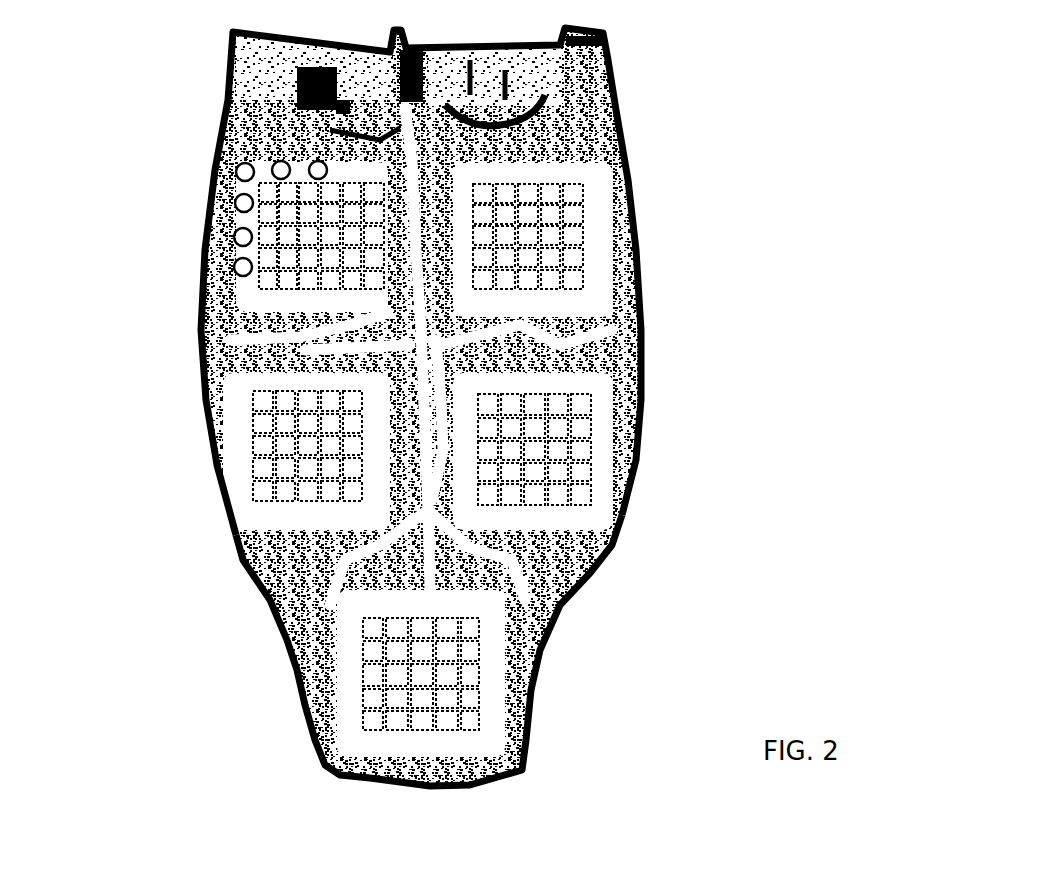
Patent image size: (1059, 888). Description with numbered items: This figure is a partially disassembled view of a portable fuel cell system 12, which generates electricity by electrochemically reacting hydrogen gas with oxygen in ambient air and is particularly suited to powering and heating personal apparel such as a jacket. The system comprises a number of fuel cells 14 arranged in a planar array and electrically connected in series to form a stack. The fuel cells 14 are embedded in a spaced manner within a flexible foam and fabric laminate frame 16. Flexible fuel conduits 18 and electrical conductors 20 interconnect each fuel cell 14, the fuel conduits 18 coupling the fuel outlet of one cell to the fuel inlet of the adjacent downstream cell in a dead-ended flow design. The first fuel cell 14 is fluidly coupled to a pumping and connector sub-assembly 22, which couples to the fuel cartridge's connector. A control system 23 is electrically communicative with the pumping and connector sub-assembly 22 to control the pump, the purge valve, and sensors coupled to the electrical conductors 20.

The portable fuel cell system 12 is at (136, 138).
The fuel cell 14 is at (488, 673).
The flexible foam and fabric laminate frame 16 is at (587, 578).
The flexible fuel conduits 18 is at (460, 550).
The electrical conductors 20 is at (200, 373).
The pumping and connector sub-assembly 22 is at (528, 62).
The control system 23 is at (350, 107).